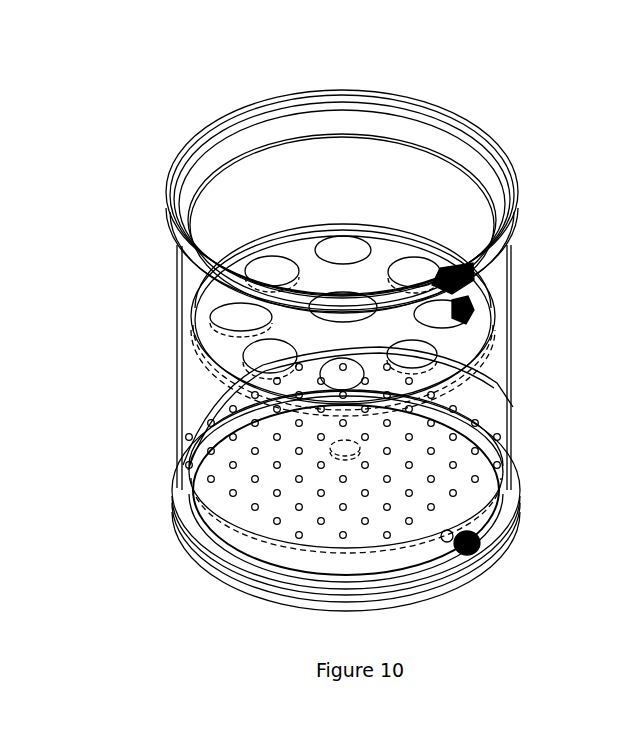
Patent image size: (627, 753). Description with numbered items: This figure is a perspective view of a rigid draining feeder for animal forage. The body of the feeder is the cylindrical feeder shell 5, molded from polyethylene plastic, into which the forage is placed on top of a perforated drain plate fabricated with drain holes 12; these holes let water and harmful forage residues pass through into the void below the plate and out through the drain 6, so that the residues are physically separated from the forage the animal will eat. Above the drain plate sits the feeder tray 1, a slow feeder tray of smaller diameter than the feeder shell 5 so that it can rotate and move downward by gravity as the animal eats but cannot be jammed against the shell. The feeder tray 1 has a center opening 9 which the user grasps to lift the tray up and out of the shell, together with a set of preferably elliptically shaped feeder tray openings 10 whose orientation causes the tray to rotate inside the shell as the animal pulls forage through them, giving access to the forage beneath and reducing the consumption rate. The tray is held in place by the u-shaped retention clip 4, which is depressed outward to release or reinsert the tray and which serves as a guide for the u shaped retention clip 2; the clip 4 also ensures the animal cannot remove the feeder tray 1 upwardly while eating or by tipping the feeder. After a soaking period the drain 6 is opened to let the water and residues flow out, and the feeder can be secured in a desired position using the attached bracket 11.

The feeder tray 1 is at (509, 372).
The u shaped retention clip 2 is at (450, 268).
The u-shaped retention clip 4 is at (472, 306).
The feeder shell 5 is at (517, 363).
The drain 6 is at (513, 527).
The center opening 9 is at (344, 282).
The feeder tray openings 10 is at (362, 243).
The bracket 11 is at (455, 345).
The drain holes 12 is at (440, 477).